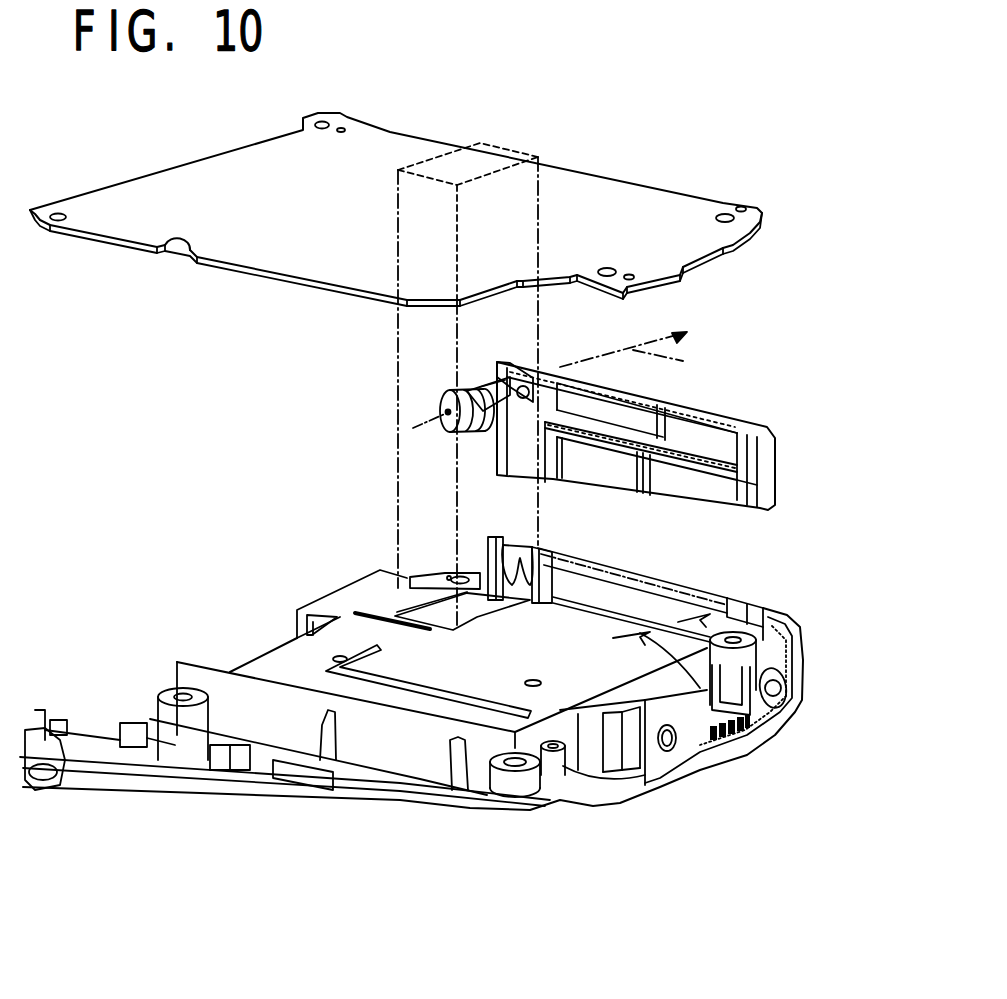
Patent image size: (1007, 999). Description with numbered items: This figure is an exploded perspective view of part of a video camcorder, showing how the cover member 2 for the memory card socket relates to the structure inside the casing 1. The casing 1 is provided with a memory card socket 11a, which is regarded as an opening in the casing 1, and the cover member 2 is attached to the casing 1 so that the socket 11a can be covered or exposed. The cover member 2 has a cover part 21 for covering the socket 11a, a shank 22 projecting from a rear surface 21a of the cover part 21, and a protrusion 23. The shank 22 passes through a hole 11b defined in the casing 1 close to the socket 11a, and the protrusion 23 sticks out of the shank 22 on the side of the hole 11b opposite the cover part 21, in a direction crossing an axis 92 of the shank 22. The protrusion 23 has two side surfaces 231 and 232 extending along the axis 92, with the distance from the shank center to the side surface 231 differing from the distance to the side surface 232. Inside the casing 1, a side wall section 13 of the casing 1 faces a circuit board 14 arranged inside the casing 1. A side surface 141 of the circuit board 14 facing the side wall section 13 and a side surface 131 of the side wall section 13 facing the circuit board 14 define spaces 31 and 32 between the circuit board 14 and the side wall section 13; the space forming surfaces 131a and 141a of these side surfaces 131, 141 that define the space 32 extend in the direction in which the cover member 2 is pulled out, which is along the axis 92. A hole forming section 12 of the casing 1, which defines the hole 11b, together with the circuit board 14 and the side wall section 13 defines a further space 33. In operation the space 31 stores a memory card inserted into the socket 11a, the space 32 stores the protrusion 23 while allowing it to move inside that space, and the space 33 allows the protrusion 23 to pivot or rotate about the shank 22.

The casing 1 is at (459, 648).
The cover member 2 is at (566, 416).
The memory card socket 11a is at (727, 600).
The hole 11b is at (524, 548).
The hole forming section 12 is at (490, 550).
The side wall section 13 is at (345, 606).
The circuit board 14 is at (245, 275).
The cover part 21 is at (700, 405).
The rear surface 21a is at (512, 375).
The shank 22 is at (488, 386).
The protrusion 23 is at (391, 448).
The space 31 is at (723, 707).
The space 32 is at (507, 610).
The space 33 is at (490, 556).
The axis 92 is at (638, 358).
The side surface 131 is at (481, 677).
The space forming surface 131a is at (475, 622).
The side surface 141 is at (283, 282).
The space forming surface 141a is at (518, 155).
The side surface 231 is at (470, 432).
The side surface 232 is at (462, 381).